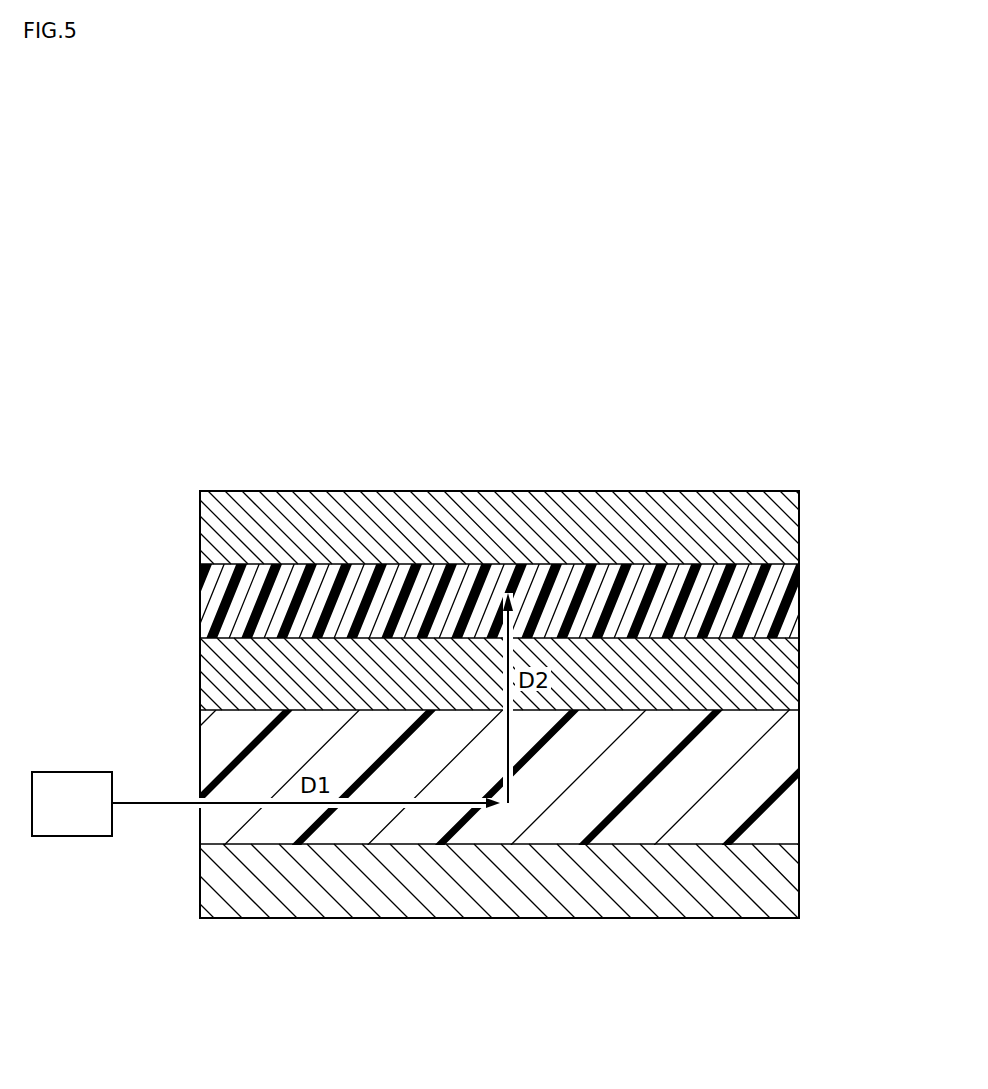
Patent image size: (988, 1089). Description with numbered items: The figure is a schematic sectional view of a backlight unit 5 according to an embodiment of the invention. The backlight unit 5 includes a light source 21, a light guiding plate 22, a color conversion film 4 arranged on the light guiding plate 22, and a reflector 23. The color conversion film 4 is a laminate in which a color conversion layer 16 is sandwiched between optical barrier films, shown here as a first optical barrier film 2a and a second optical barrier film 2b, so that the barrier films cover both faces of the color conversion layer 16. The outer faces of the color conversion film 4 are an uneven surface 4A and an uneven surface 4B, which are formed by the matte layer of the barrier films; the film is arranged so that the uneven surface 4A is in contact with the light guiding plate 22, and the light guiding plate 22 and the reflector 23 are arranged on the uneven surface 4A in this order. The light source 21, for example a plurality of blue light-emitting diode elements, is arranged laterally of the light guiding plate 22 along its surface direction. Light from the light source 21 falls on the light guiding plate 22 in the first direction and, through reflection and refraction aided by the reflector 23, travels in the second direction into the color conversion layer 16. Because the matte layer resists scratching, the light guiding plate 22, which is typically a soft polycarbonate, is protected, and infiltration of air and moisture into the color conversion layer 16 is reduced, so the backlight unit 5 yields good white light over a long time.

The backlight unit 5 is at (507, 604).
The color conversion film 4 is at (544, 602).
The uneven surface 4B is at (745, 491).
The uneven surface 4A is at (748, 711).
The second optical barrier film 2b is at (790, 527).
The color conversion layer 16 is at (790, 598).
The first optical barrier film 2a is at (533, 674).
The light guiding plate 22 is at (790, 811).
The reflector 23 is at (790, 887).
The light source 21 is at (72, 837).